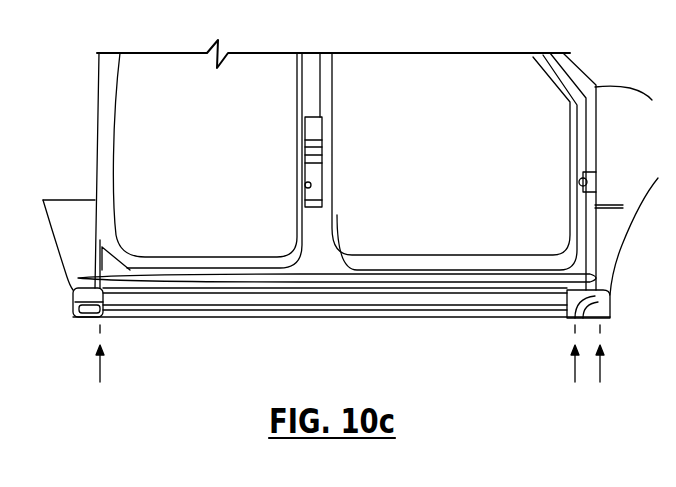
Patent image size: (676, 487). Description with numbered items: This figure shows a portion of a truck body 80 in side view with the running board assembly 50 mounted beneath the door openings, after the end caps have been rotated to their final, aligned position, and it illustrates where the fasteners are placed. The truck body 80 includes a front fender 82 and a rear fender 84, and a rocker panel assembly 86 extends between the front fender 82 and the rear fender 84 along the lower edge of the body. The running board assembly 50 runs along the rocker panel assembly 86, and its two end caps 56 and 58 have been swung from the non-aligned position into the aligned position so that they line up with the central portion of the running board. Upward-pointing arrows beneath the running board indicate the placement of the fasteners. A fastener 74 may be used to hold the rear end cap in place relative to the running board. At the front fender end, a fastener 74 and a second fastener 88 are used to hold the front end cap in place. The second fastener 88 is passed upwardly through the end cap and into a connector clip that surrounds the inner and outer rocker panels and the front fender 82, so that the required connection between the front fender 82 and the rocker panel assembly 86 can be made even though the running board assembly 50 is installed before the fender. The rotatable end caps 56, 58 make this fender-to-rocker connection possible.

The running board assembly 50 is at (213, 317).
The end cap 56 is at (615, 318).
The end cap 58 is at (70, 318).
The fastener 74 is at (100, 327).
The truck body 80 is at (387, 140).
The front fender 82 is at (644, 178).
The rear fender 84 is at (70, 200).
The rocker panel assembly 86 is at (472, 290).
The second fastener 88 is at (600, 327).